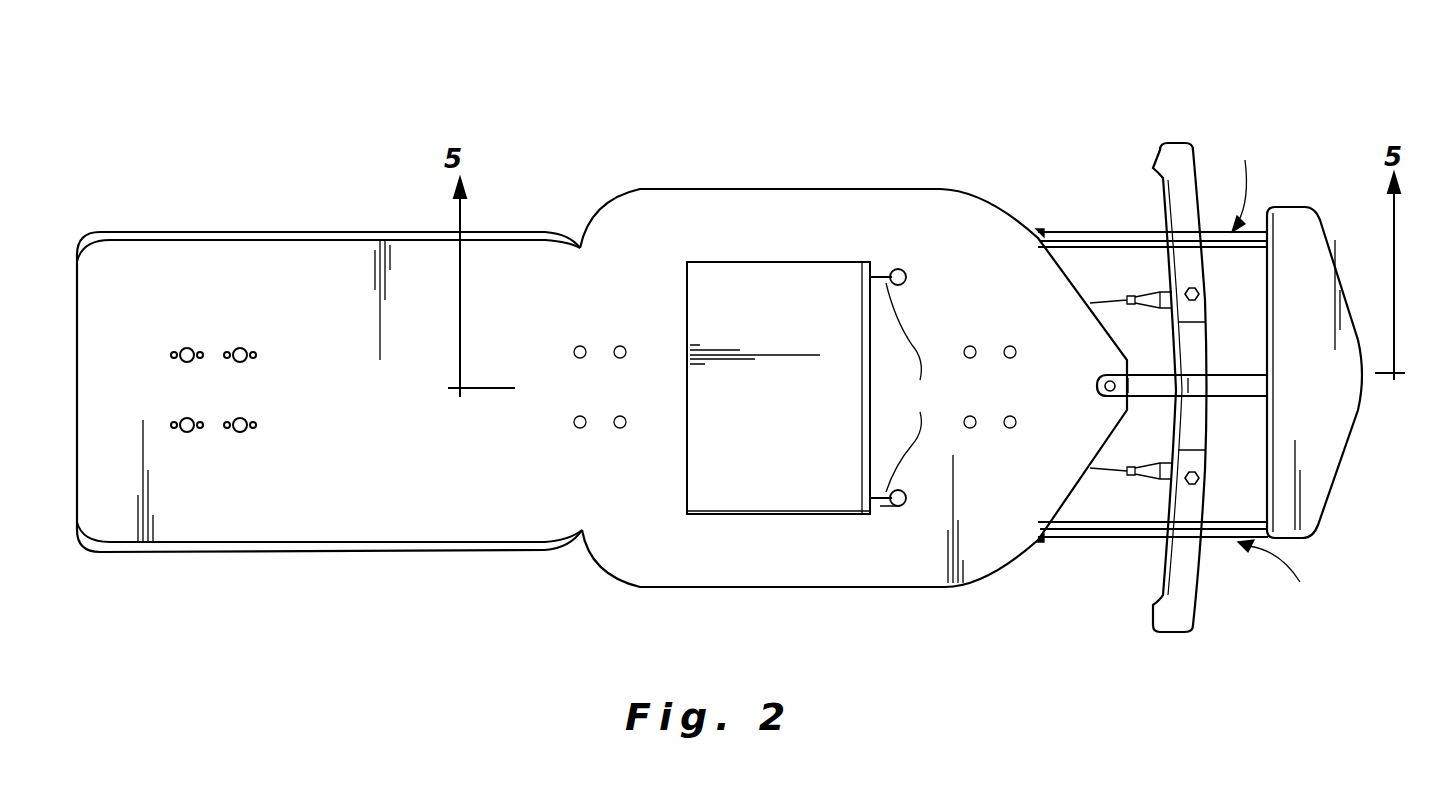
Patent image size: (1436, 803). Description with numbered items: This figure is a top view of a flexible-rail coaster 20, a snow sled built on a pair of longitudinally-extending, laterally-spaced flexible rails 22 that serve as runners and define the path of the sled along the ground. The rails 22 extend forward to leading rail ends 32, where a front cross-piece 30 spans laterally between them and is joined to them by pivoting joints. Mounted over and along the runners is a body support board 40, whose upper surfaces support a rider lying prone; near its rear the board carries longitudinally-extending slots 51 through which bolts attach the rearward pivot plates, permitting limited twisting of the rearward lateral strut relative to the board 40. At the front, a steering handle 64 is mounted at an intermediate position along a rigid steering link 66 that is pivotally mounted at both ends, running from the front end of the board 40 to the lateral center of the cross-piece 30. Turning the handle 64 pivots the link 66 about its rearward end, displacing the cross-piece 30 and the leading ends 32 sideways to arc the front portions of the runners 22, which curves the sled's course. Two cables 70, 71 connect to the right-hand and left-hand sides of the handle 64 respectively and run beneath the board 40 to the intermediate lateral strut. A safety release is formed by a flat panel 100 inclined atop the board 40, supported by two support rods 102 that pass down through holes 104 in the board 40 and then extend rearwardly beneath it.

The flexible-rail coaster 20 is at (1050, 82).
The flexible rails 22 is at (1102, 230).
The front cross-piece 30 is at (1335, 411).
The leading rail ends 32 is at (1280, 369).
The body support board 40 is at (376, 451).
The longitudinally-extending slots 51 is at (231, 353).
The steering handle 64 is at (1186, 578).
The rigid steering link 66 is at (1225, 388).
The cable 70 is at (1105, 478).
The cable 71 is at (1110, 302).
The flat panel 100 is at (800, 437).
The support rods 102 is at (911, 387).
The holes 104 is at (895, 266).